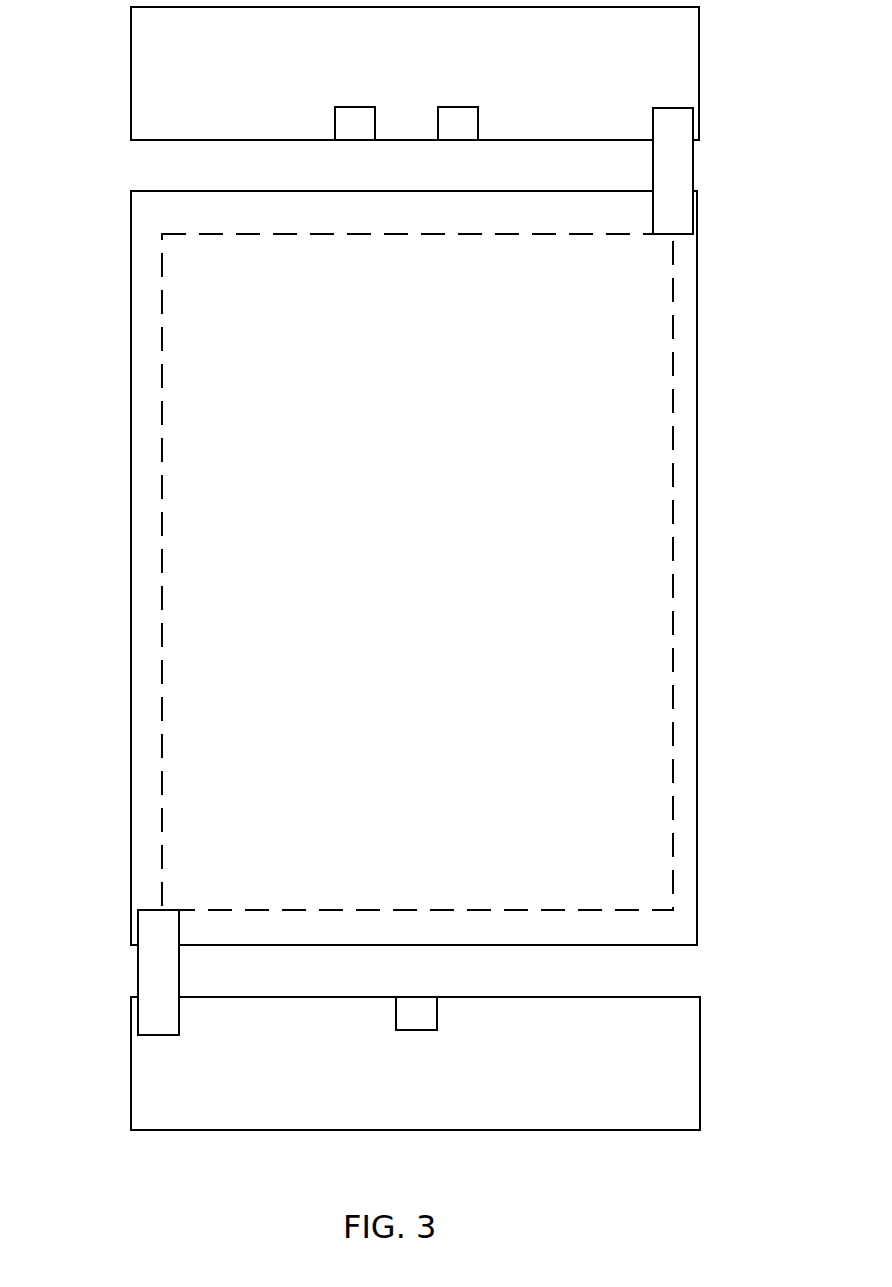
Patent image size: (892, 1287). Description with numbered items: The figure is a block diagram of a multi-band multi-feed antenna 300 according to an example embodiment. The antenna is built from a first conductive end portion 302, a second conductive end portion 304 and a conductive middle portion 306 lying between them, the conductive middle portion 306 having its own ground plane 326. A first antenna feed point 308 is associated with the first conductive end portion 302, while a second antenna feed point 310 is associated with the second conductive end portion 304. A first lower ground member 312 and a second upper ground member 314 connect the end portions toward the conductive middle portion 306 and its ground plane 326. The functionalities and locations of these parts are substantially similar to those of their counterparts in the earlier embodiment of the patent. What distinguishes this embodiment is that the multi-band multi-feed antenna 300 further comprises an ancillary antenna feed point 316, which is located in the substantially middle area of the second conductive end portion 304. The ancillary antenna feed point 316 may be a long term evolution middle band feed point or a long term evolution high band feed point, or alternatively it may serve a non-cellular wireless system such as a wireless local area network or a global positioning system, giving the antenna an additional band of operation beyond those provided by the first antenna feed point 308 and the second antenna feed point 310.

The multi-band multi-feed antenna 300 is at (81, 556).
The first conductive end portion 302 is at (131, 1115).
The second conductive end portion 304 is at (131, 46).
The conductive middle portion 306 is at (131, 315).
The first antenna feed point 308 is at (413, 997).
The second antenna feed point 310 is at (455, 141).
The first lower ground member 312 is at (138, 971).
The second upper ground member 314 is at (693, 165).
The ancillary antenna feed point 316 is at (352, 141).
The ground plane 326 is at (162, 413).